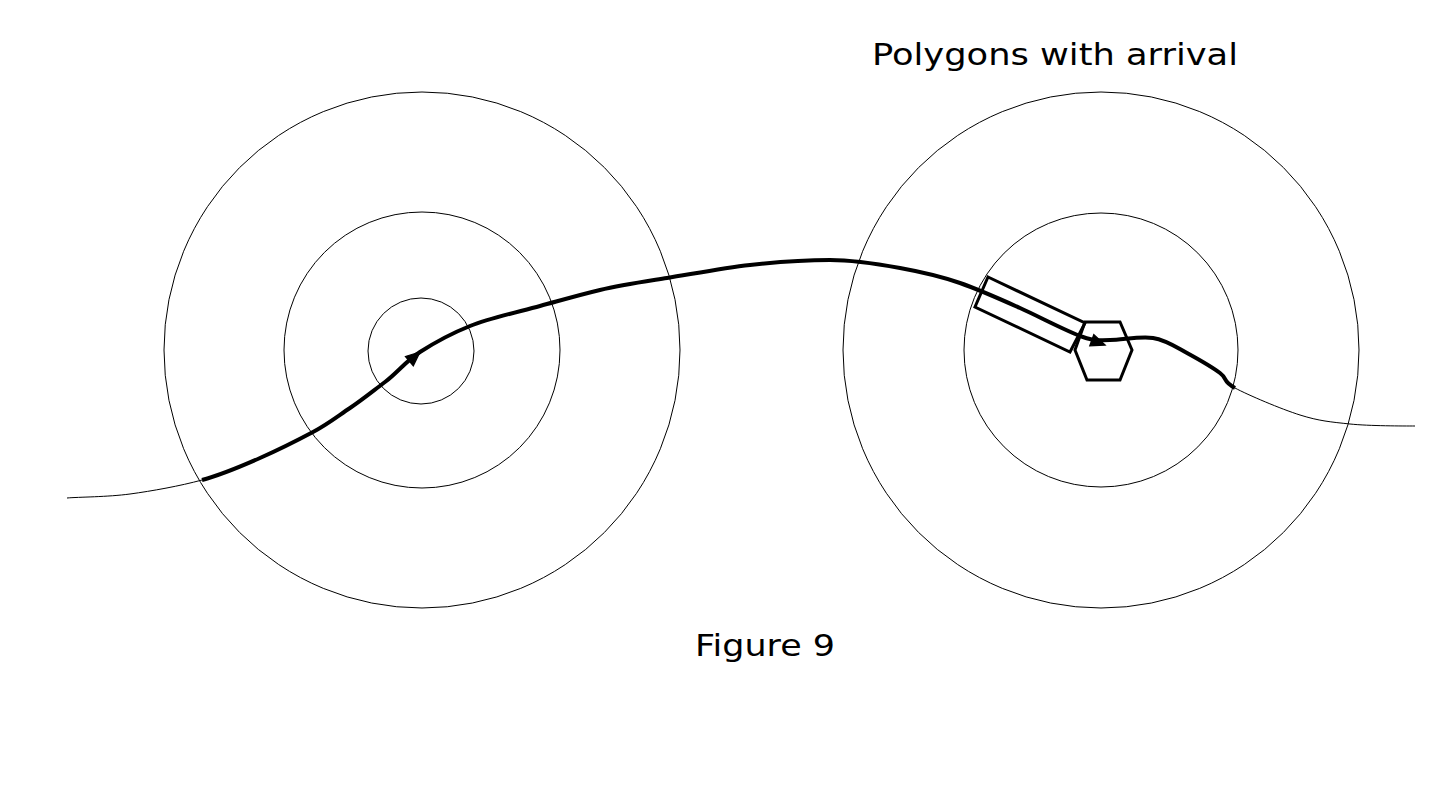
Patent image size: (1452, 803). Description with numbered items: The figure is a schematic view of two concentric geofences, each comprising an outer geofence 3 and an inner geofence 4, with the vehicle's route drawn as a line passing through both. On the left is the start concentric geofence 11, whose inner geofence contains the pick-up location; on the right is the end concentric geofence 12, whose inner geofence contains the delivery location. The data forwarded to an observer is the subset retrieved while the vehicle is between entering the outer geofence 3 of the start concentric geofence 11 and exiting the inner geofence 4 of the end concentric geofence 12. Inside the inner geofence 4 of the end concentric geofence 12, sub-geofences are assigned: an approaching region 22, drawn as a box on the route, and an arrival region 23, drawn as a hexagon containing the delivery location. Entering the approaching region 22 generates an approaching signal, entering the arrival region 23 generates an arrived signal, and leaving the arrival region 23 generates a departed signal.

The outer geofence 3 is at (670, 246).
The inner geofence 4 is at (282, 275).
The start concentric geofence 11 is at (625, 134).
The end concentric geofence 12 is at (1342, 505).
The approaching region 22 is at (1060, 287).
The arrival region 23 is at (1131, 313).